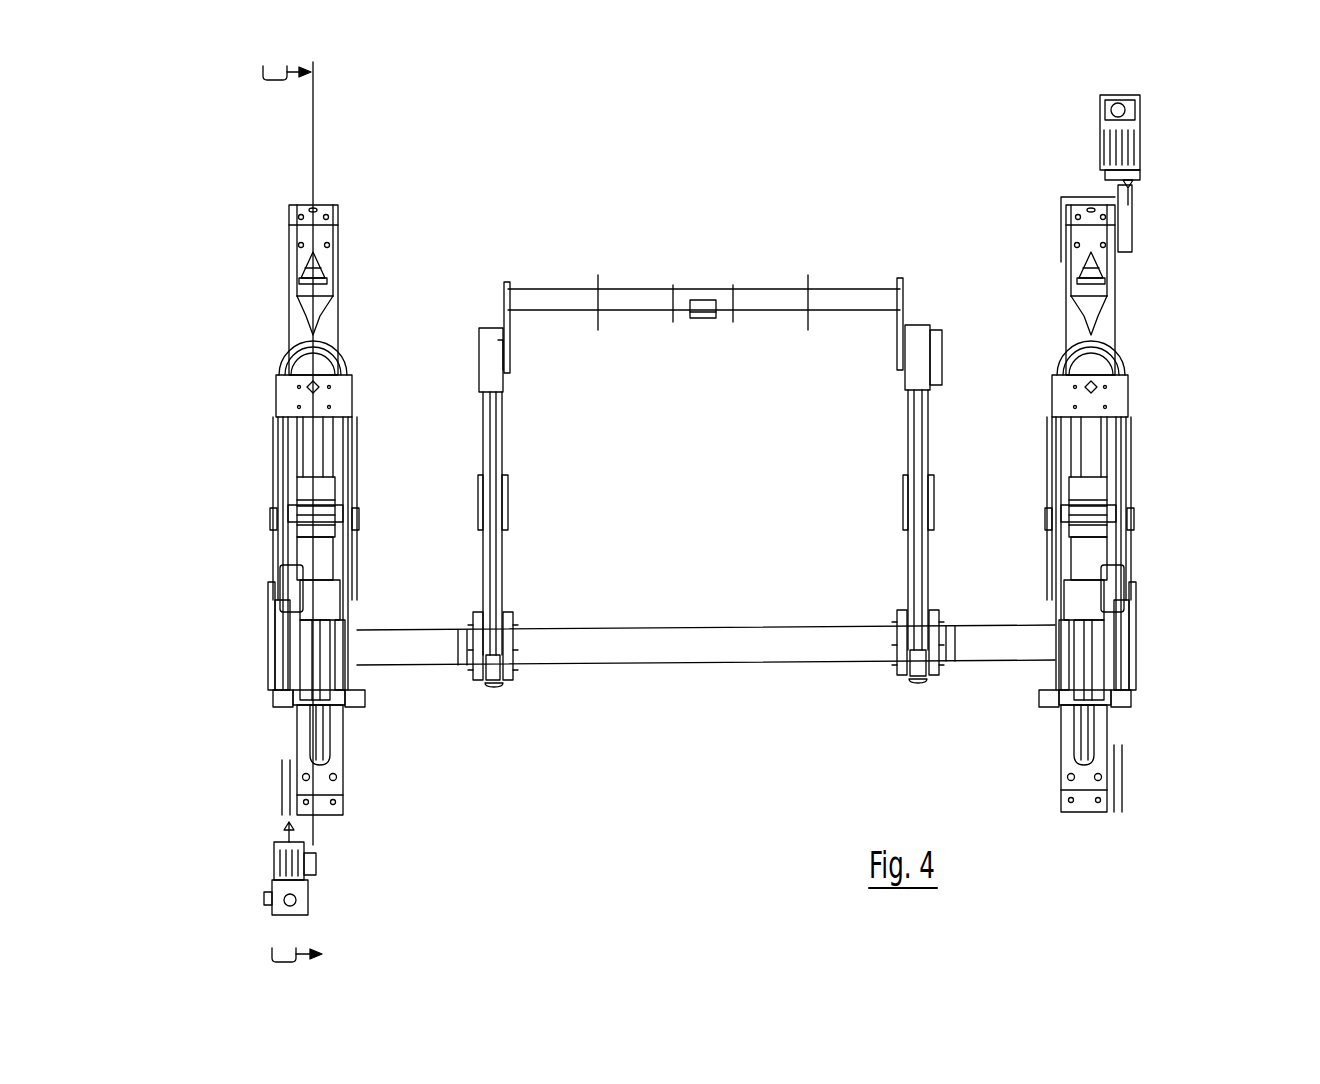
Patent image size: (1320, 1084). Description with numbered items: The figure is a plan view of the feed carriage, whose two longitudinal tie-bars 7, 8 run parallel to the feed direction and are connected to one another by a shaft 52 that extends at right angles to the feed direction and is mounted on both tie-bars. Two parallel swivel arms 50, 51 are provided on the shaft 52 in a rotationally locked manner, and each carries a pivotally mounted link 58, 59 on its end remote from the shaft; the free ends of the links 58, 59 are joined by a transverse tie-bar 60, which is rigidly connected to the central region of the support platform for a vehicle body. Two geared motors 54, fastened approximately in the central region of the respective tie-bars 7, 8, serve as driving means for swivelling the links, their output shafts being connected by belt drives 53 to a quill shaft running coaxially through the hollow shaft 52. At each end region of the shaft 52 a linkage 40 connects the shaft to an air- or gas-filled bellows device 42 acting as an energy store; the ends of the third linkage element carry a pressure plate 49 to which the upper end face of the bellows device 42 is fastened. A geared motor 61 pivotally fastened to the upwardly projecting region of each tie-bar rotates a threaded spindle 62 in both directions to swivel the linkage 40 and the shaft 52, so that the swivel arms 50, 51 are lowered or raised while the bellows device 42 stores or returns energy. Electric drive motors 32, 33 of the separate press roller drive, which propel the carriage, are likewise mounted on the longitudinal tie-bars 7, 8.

The longitudinal tie-bar 7 is at (297, 312).
The longitudinal tie-bar 8 is at (1105, 300).
The electric drive motor 32 is at (275, 860).
The electric drive motor 33 is at (1138, 138).
The linkage 40 is at (1122, 722).
The bellows device 42 is at (1100, 350).
The pressure plate 49 is at (1105, 388).
The swivel arm 50 is at (500, 448).
The swivel arm 51 is at (905, 418).
The shaft 52 is at (705, 640).
The belt drive 53 is at (275, 640).
The geared motor 54 is at (290, 582).
The link 58 is at (505, 295).
The link 59 is at (905, 290).
The transverse tie-bar 60 is at (620, 310).
The geared motor 61 is at (300, 525).
The threaded spindle 62 is at (315, 683).